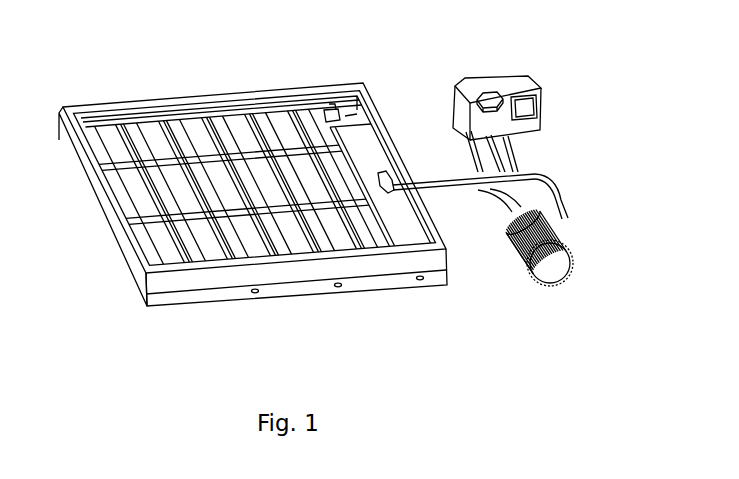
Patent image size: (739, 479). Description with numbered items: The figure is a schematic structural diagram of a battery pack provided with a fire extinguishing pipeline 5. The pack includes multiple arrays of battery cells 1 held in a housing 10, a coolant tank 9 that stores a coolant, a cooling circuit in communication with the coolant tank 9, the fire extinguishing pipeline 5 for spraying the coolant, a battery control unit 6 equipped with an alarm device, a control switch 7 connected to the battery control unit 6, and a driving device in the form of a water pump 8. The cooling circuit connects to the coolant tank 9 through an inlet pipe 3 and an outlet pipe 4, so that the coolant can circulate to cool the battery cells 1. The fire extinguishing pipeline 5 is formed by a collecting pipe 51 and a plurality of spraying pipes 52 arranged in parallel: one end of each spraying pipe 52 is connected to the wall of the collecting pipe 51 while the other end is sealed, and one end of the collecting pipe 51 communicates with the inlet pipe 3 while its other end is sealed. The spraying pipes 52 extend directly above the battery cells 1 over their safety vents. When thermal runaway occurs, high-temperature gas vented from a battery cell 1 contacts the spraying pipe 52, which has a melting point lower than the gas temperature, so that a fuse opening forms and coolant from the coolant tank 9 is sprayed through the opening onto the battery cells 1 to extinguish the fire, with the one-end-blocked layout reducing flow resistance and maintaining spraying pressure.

The battery cells 1 is at (303, 250).
The inlet pipe 3 is at (470, 172).
The outlet pipe 4 is at (498, 195).
The fire extinguishing pipeline 5 is at (212, 142).
The collecting pipe 51 is at (207, 116).
The spraying pipe 52 is at (150, 117).
The battery control unit 6 is at (400, 237).
The control switch 7 is at (332, 112).
The water pump 8 is at (546, 270).
The coolant tank 9 is at (498, 90).
The housing 10 is at (100, 197).